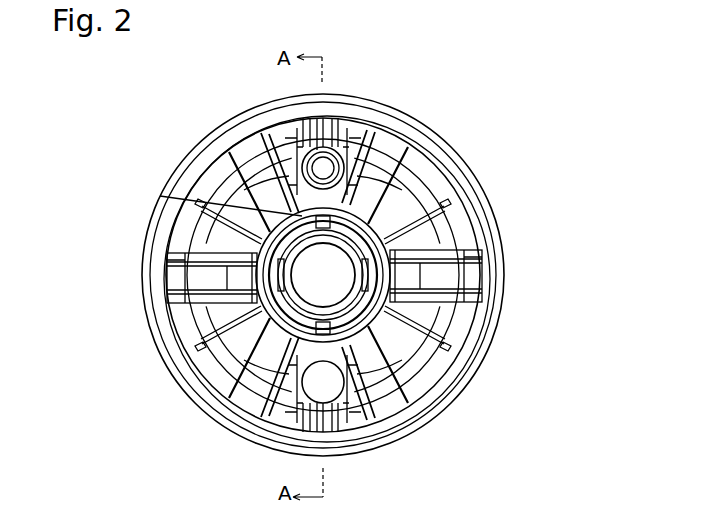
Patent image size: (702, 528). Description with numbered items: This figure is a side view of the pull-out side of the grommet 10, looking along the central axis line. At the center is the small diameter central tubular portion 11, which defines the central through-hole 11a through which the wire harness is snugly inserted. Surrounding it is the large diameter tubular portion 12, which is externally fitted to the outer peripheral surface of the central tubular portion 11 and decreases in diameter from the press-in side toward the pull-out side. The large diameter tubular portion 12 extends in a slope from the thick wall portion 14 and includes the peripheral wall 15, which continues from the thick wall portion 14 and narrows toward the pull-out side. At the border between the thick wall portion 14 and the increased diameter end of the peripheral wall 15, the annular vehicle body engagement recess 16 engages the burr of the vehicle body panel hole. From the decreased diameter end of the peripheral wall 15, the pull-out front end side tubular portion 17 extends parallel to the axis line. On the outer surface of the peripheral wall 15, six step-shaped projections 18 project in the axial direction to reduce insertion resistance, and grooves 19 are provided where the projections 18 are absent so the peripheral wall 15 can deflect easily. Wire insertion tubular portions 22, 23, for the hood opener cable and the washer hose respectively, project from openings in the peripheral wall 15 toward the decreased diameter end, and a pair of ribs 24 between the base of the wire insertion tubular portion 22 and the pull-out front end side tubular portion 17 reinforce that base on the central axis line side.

The grommet 10 is at (100, 110).
The central tubular portion 11 is at (382, 390).
The central through-hole 11a is at (320, 286).
The large diameter tubular portion 12 is at (477, 377).
The thick wall portion 14 is at (498, 262).
The peripheral wall 15 is at (453, 320).
The vehicle body engagement recess 16 is at (467, 207).
The pull-out front end side tubular portion 17 is at (352, 217).
The step-shaped projections 18 is at (260, 378).
The grooves 19 is at (228, 208).
The wire insertion tubular portion 22 is at (361, 133).
The wire insertion tubular portion 23 is at (324, 388).
The ribs 24 is at (258, 147).